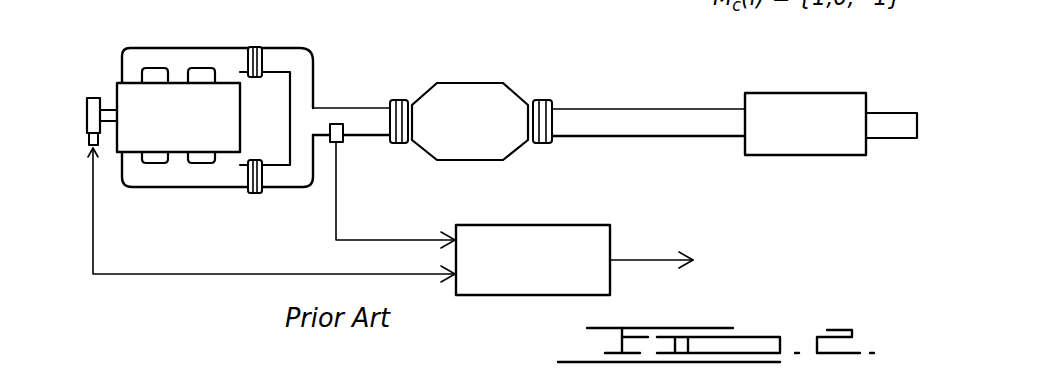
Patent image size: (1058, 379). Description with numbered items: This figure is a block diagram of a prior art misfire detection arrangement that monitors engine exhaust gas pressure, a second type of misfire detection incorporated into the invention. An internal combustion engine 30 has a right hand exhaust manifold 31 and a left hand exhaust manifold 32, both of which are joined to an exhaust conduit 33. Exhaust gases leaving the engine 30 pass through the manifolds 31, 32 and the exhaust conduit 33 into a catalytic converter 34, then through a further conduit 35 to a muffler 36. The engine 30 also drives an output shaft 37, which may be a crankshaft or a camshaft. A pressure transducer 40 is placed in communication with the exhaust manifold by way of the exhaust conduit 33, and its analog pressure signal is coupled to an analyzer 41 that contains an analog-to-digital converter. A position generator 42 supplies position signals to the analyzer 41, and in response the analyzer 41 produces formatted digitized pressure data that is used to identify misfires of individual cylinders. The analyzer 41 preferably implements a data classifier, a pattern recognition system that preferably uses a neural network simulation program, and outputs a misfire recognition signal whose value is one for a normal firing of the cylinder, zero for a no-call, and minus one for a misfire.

The internal combustion engine 30 is at (114, 88).
The right hand exhaust manifold 31 is at (200, 58).
The left hand exhaust manifold 32 is at (188, 178).
The exhaust conduit 33 is at (367, 115).
The catalytic converter 34 is at (473, 97).
The conduit 35 is at (633, 118).
The muffler 36 is at (835, 148).
The output shaft 37 is at (87, 98).
The pressure transducer 40 is at (345, 142).
The analyzer 41 is at (568, 232).
The position generator 42 is at (98, 143).